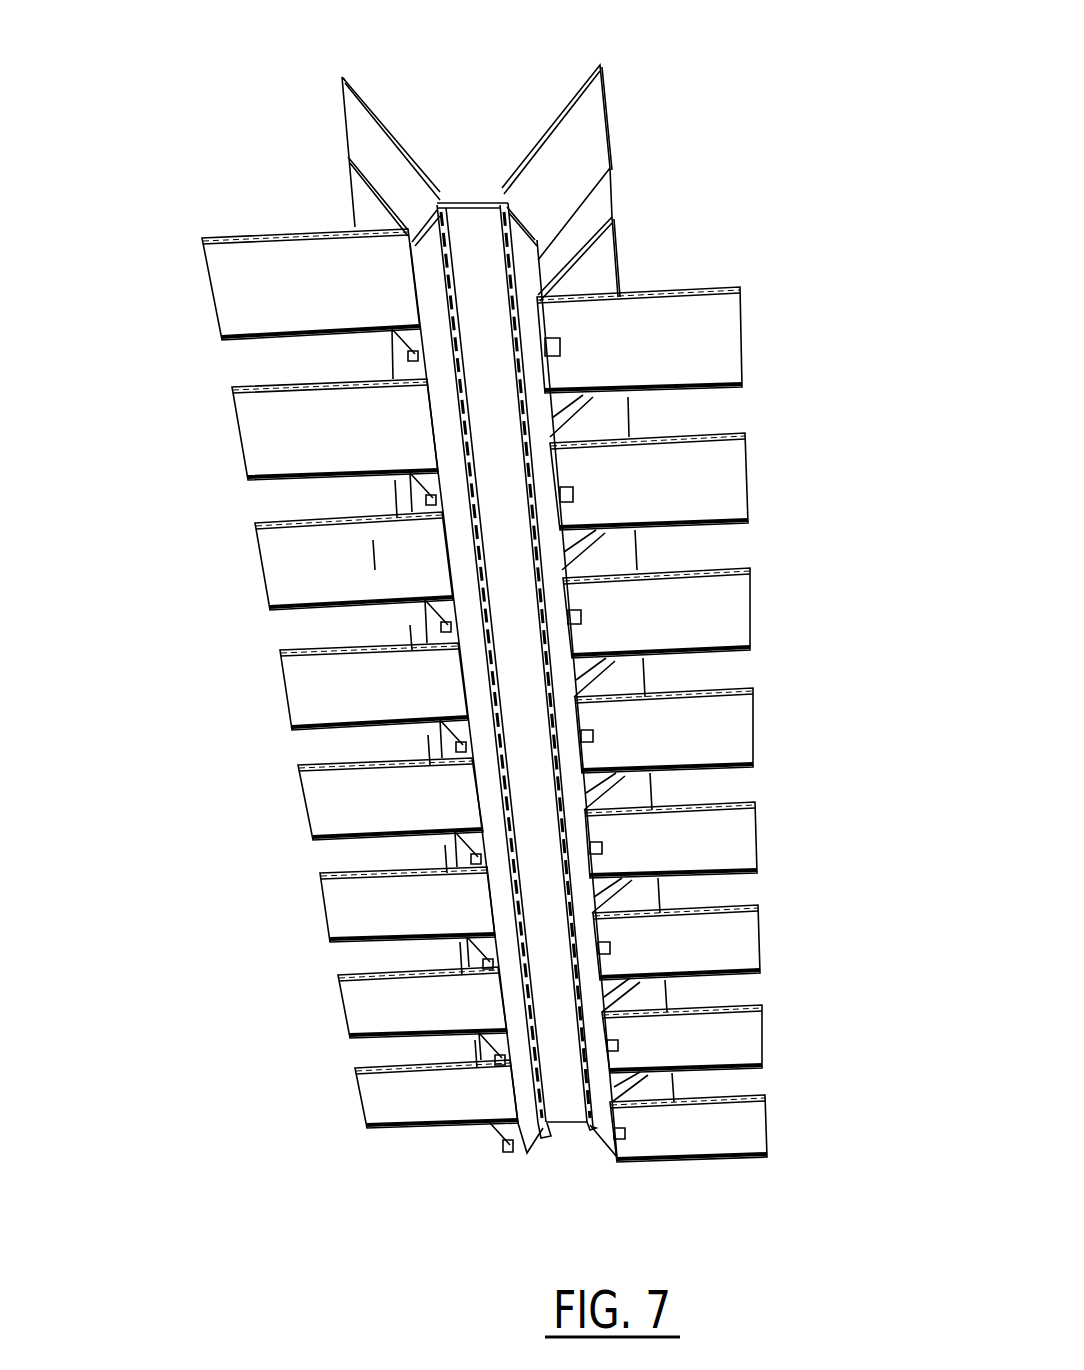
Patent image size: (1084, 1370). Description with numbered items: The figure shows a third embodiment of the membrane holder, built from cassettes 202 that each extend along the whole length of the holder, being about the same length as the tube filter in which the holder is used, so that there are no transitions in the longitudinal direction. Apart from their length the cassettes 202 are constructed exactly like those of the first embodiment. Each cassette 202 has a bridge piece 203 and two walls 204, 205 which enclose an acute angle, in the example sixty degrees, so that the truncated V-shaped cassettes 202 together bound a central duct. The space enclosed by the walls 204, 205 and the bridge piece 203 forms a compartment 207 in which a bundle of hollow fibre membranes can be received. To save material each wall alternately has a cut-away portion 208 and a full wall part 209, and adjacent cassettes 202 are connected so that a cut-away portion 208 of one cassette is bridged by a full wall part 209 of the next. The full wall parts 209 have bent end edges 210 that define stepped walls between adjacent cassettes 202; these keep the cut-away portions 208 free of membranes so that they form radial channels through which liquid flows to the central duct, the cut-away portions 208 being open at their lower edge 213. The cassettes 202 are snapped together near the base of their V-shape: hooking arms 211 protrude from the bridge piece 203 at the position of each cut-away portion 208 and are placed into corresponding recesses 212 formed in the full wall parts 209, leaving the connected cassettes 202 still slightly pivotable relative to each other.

The cassette 202 is at (389, 1155).
The bridge piece 203 is at (465, 227).
The wall 204 is at (411, 84).
The wall 205 is at (319, 169).
The compartment 207 is at (531, 97).
The cut-away portion 208 is at (273, 358).
The full wall part 209 is at (335, 275).
The bent end edge 210 is at (242, 337).
The hooking arm 211 is at (413, 362).
The recess 212 is at (590, 735).
The lower edge 213 is at (393, 480).